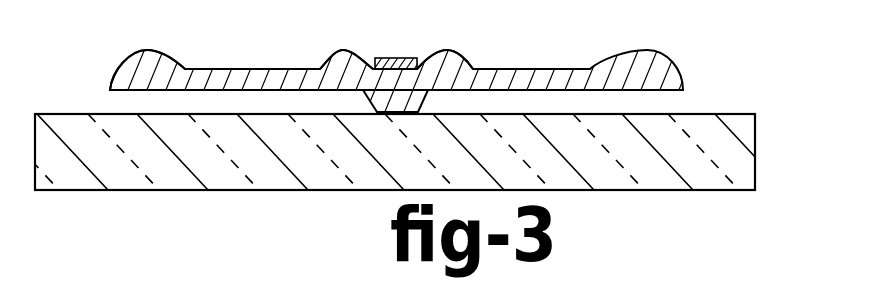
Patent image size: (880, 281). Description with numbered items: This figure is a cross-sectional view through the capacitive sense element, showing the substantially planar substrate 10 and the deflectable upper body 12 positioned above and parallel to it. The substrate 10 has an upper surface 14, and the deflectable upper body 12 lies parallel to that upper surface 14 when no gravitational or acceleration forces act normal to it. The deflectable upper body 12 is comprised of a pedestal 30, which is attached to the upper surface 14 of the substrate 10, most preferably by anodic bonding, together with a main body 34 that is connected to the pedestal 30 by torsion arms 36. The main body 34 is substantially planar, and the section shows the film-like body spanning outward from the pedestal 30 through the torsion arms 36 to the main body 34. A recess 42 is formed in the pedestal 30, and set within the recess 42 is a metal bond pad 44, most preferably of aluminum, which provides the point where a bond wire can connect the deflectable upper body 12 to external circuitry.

The substrate 10 is at (748, 148).
The deflectable upper body 12 is at (663, 45).
The upper surface 14 is at (717, 113).
The pedestal 30 is at (418, 110).
The main body 34 is at (141, 50).
The torsion arms 36 is at (258, 52).
The recess 42 is at (374, 68).
The metal bond pad 44 is at (398, 57).